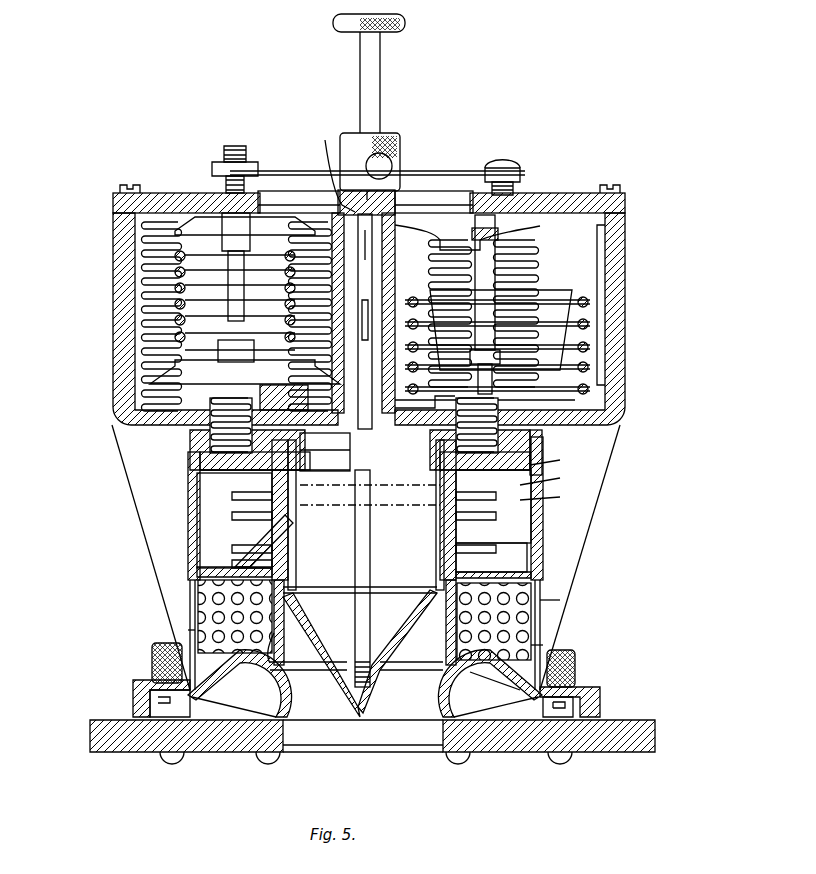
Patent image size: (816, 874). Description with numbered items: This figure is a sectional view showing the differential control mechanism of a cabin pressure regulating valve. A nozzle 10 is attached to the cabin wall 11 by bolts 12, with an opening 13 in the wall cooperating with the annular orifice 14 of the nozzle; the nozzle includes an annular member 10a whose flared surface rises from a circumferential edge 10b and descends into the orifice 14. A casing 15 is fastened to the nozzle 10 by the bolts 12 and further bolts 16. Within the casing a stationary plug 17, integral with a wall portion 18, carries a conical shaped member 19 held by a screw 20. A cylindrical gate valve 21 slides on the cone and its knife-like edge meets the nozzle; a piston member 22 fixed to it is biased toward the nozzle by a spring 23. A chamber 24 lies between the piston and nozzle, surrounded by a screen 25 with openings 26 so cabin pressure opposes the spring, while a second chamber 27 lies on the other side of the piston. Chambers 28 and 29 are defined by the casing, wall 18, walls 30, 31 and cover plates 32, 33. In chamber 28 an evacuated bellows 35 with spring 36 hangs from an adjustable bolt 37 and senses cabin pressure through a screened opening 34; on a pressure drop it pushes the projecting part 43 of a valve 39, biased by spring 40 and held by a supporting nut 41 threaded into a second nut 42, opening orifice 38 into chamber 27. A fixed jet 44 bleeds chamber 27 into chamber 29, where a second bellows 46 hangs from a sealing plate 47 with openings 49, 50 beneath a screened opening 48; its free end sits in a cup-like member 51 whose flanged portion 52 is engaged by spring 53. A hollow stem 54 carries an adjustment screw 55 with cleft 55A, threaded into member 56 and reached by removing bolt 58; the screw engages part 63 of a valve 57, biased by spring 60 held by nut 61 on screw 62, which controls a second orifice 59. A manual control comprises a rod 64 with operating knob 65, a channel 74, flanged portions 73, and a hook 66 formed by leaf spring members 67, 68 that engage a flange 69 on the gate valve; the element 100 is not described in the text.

The operating knob 65 is at (405, 25).
The rod 64 is at (380, 68).
The flanged portions 73 is at (395, 133).
The screw 20 is at (400, 148).
The wall 31 is at (400, 173).
The wall 30 is at (328, 169).
The cover plate 33 is at (560, 196).
The screened opening 34 is at (290, 195).
The screened opening 48 is at (425, 203).
The cover plate 32 is at (212, 165).
The adjustable bolt 37 is at (232, 232).
The evacuated bellows 35 is at (145, 264).
The spring 36 is at (150, 318).
The projecting part 43 is at (165, 380).
The second nut 42 is at (284, 404).
The chamber 28 is at (117, 425).
The channel 74 is at (372, 280).
The opening 49 is at (440, 243).
The second bellows 46 is at (535, 262).
The cup-like member 51 is at (545, 292).
The hollow stem 54 is at (492, 250).
The opening 50 is at (498, 235).
The bolt 58 is at (510, 168).
The sealing plate 47 is at (605, 240).
The flanged portion 52 is at (590, 302).
The spring 53 is at (590, 324).
The adjustment screw 55 is at (590, 347).
The cleft 55A is at (440, 320).
The member 56 is at (440, 348).
The chamber 29 is at (600, 358).
The part 63 is at (478, 380).
The second orifice 59 is at (530, 390).
The fixed jet 44 is at (430, 408).
The orifice 38 is at (210, 430).
The valve 39 is at (214, 440).
The spring 40 is at (200, 462).
The wall portion 18 is at (325, 451).
The engaging hook 66 is at (325, 455).
The supporting nut 41 is at (325, 470).
The leaf spring member 67 is at (430, 436).
The leaf spring member 68 is at (456, 463).
The nut 61 is at (440, 480).
The valve 57 is at (542, 445).
The screw 62 is at (555, 460).
The casing 15 is at (550, 478).
The spring 60 is at (550, 497).
The second chamber 27 is at (197, 520).
The flange 69 is at (272, 510).
The spring 23 is at (470, 515).
The piston member 22 is at (495, 565).
The stationary plug 17 is at (440, 565).
The conical shaped member 19 is at (330, 615).
The cylindrical gate valve 21 is at (445, 650).
The openings 26 is at (198, 603).
The screen 25 is at (563, 601).
The chamber 24 is at (188, 630).
The arm 100 is at (285, 655).
The nozzle 10 is at (262, 690).
The annular member 10a is at (495, 678).
The circumferential edge 10b is at (575, 670).
The cabin wall 11 is at (600, 740).
The orifice 14 is at (380, 730).
The opening 13 is at (400, 752).
The bolts 12 is at (185, 762).
The bolts 16 is at (560, 752).